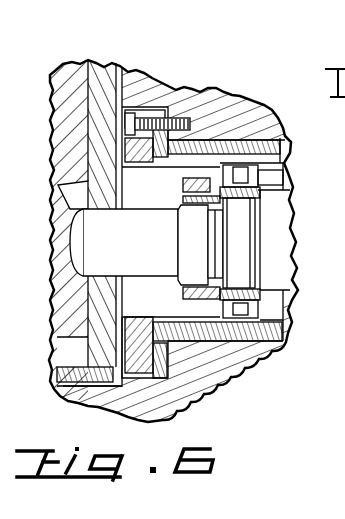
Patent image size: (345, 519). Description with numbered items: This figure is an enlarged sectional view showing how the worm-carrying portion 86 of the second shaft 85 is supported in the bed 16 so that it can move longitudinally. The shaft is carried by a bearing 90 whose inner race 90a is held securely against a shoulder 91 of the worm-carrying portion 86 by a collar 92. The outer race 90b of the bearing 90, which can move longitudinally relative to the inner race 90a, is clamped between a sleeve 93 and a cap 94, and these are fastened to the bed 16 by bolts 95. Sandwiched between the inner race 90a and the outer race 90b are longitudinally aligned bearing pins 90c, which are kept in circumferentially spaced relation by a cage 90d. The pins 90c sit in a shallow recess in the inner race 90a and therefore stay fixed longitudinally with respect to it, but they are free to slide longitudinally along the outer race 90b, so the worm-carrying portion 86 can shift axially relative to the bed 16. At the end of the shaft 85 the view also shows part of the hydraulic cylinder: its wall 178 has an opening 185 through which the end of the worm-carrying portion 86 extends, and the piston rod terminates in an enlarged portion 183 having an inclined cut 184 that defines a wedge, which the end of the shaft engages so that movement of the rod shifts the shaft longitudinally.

The bed 16 is at (214, 88).
The second shaft 85 is at (293, 300).
The worm-carrying portion 86 is at (289, 243).
The bearing 90 is at (283, 133).
The inner race 90a is at (183, 190).
The outer race 90b is at (226, 165).
The bearing pins 90c is at (240, 165).
The cage 90d is at (285, 178).
The shoulder 91 is at (260, 197).
The collar 92 is at (190, 291).
The sleeve 93 is at (202, 140).
The cap 94 is at (162, 168).
The bolts 95 is at (131, 120).
The cylinder wall 178 is at (97, 62).
The enlarged portion 183 is at (60, 70).
The inclined cut 184 is at (52, 213).
The opening 185 is at (100, 273).